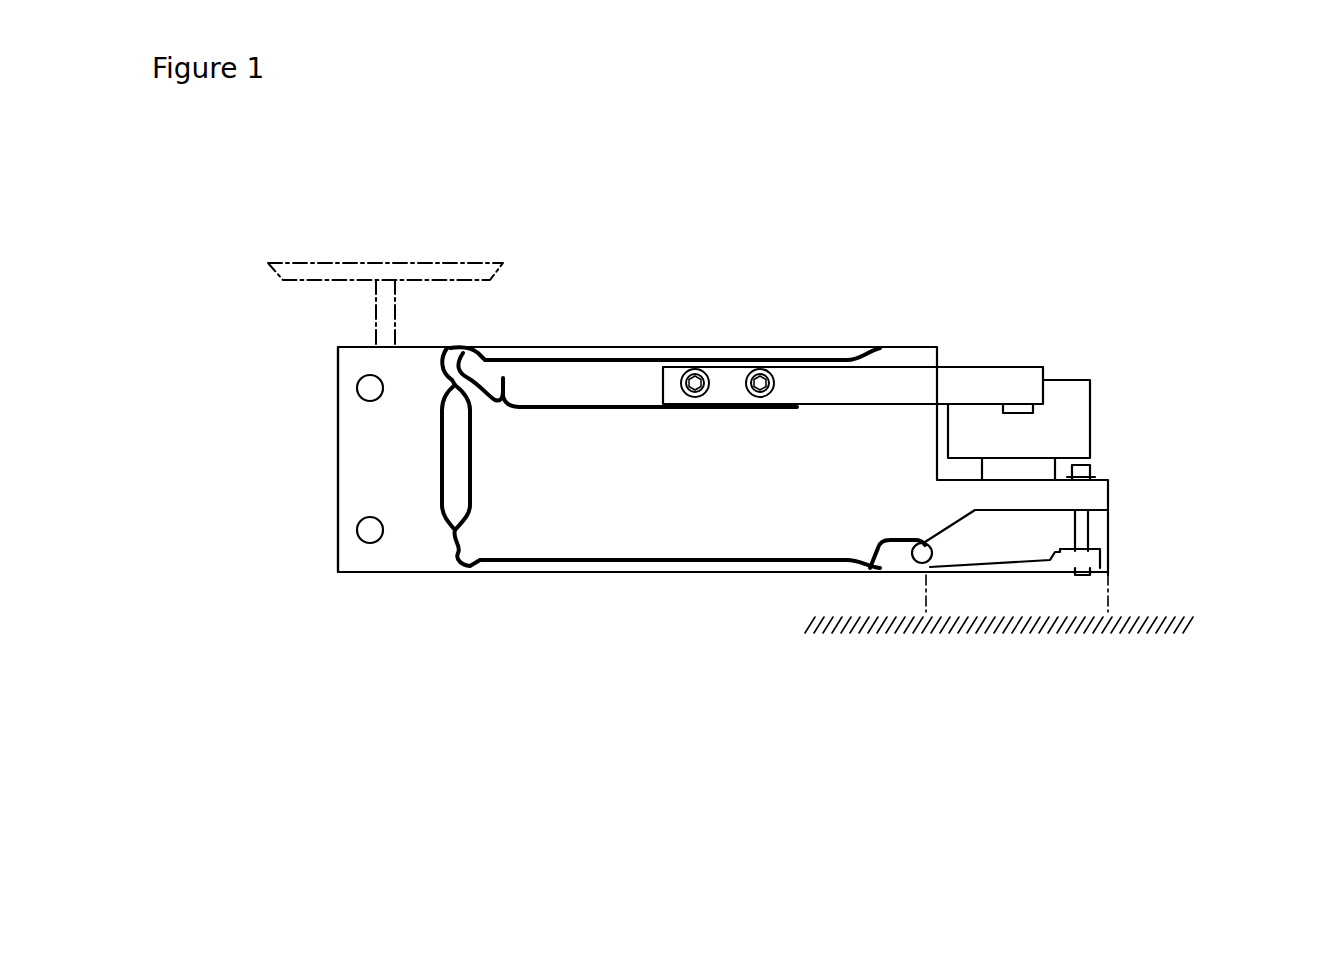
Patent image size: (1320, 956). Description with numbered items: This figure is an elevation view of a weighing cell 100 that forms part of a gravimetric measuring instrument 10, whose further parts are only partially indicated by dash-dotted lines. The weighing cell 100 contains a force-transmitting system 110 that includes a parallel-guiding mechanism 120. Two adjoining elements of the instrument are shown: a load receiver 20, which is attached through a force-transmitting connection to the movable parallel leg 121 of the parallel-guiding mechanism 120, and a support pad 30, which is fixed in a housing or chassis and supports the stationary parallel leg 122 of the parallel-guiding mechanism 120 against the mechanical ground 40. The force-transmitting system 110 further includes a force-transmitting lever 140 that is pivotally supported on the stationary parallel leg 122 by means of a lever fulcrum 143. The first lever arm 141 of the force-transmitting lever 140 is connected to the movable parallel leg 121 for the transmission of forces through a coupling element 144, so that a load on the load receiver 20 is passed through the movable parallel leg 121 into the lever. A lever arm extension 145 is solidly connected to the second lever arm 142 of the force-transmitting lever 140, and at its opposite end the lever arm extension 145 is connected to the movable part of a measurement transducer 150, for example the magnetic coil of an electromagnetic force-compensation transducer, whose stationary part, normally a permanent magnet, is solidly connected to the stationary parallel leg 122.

The gravimetric measuring instrument 10 is at (829, 226).
The load receiver 20 is at (336, 272).
The support pad 30 is at (1067, 592).
The mechanical ground 40 is at (970, 622).
The weighing cell 100 is at (1053, 277).
The force-transmitting system 110 is at (706, 600).
The parallel-guiding mechanism 120 is at (362, 587).
The movable parallel leg 121 is at (362, 477).
The stationary parallel leg 122 is at (686, 477).
The force-transmitting lever 140 is at (568, 416).
The first lever arm 141 is at (487, 370).
The second lever arm 142 is at (609, 383).
The lever fulcrum 143 is at (500, 388).
The coupling element 144 is at (455, 445).
The lever arm extension 145 is at (971, 380).
The measurement transducer 150 is at (1067, 427).